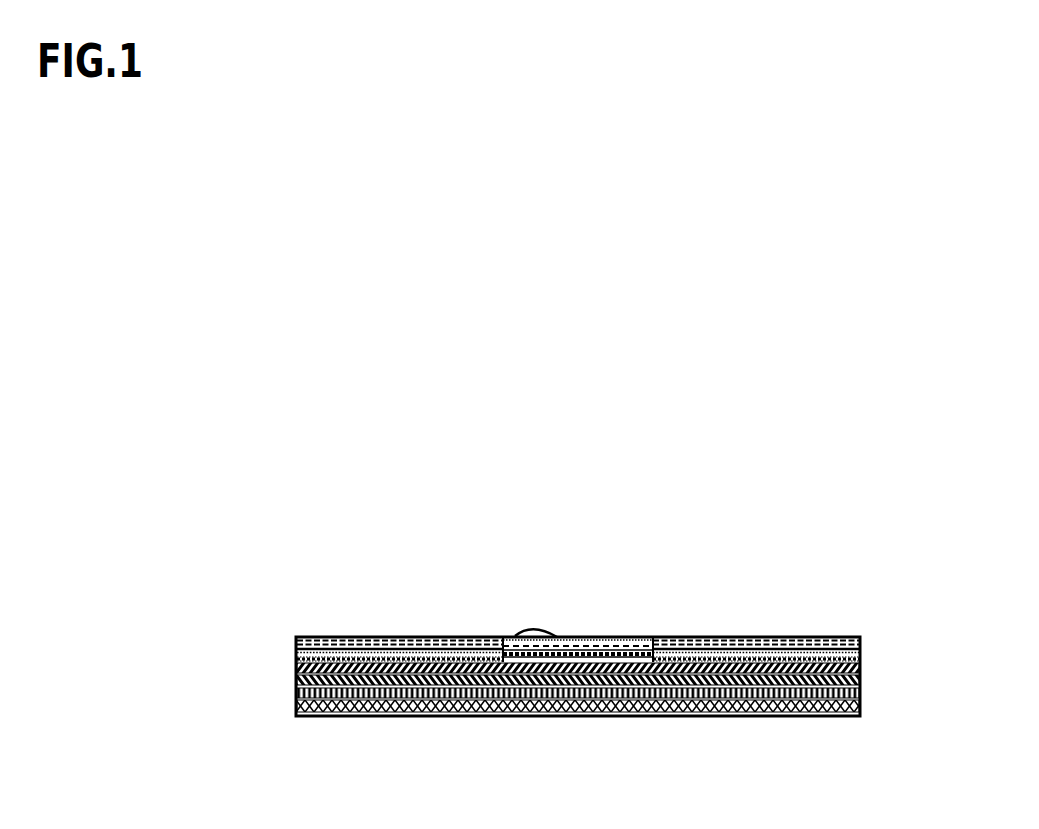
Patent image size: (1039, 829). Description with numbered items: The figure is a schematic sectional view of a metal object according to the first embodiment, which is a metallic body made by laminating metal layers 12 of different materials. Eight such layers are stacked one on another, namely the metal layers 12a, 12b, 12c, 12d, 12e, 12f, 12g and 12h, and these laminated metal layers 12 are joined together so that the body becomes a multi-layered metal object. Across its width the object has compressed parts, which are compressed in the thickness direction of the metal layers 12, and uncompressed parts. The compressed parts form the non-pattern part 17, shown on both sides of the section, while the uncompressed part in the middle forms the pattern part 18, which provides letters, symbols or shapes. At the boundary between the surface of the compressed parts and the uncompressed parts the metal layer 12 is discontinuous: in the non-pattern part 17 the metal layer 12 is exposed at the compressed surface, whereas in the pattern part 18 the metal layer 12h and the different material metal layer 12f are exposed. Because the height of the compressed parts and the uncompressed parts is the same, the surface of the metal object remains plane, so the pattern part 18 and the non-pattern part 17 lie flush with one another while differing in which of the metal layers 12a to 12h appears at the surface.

The metal layers 12 is at (943, 585).
The metal layer 12a is at (860, 707).
The metal layer 12b is at (860, 693).
The metal layer 12c is at (860, 680).
The metal layer 12d is at (860, 668).
The metal layer 12e is at (860, 658).
The metal layer 12f is at (860, 652).
The metal layer 12g is at (860, 647).
The metal layer 12h is at (860, 641).
The non-pattern part 17 is at (503, 628).
The pattern part 18 is at (655, 628).